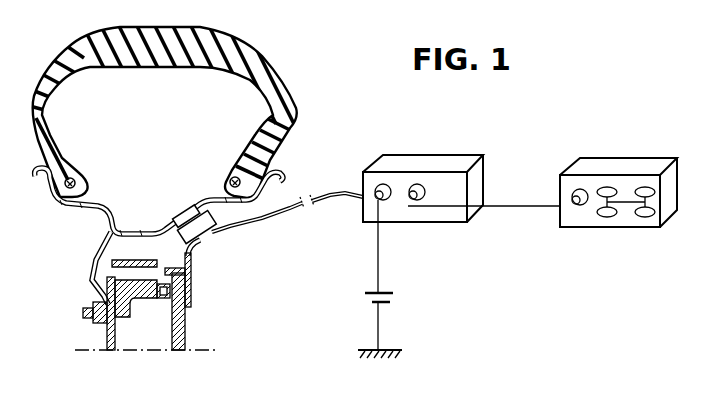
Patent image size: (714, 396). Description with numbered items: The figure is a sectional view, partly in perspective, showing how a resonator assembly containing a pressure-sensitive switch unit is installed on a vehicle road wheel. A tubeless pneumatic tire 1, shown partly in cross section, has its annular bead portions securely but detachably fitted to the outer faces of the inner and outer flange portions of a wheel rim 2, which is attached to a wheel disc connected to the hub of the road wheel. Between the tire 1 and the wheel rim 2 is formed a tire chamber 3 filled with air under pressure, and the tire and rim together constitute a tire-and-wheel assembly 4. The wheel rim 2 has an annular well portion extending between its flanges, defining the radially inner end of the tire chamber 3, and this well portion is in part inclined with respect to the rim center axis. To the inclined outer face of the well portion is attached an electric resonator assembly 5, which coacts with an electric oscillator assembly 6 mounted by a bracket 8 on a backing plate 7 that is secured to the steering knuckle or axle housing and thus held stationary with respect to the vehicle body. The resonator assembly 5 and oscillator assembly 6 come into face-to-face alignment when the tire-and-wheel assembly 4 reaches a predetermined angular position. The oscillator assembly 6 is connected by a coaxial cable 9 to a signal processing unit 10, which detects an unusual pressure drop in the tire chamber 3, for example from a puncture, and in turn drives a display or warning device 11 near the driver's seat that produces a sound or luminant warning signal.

The tubeless pneumatic tire 1 is at (131, 58).
The wheel rim 2 is at (78, 206).
The tire chamber 3 is at (159, 138).
The tire-and-wheel assembly 4 is at (297, 119).
The electric resonator assembly 5 is at (186, 212).
The electric oscillator assembly 6 is at (213, 227).
The backing plate 7 is at (187, 334).
The bracket 8 is at (195, 263).
The coaxial cable 9 is at (283, 215).
The signal processing unit 10 is at (441, 163).
The display or warning device 11 is at (632, 165).